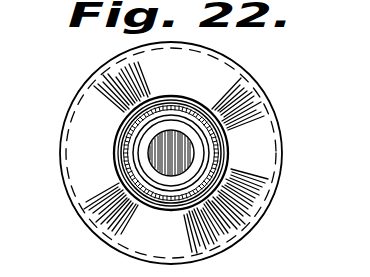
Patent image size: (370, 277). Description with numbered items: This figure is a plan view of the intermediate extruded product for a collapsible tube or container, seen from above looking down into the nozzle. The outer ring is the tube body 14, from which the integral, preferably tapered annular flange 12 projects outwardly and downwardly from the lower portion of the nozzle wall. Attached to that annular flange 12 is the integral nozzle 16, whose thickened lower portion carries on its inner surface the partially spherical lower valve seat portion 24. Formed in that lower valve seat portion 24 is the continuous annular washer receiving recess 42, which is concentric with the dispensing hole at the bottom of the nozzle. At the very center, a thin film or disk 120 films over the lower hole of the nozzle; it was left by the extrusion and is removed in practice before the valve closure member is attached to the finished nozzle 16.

The annular flange 12 is at (115, 86).
The tube body 14 is at (266, 95).
The nozzle member 16 is at (114, 138).
The lower valve seat portion 24 is at (181, 106).
The annular washer receiving recess 42 is at (161, 107).
The thin disk or web 120 is at (228, 140).